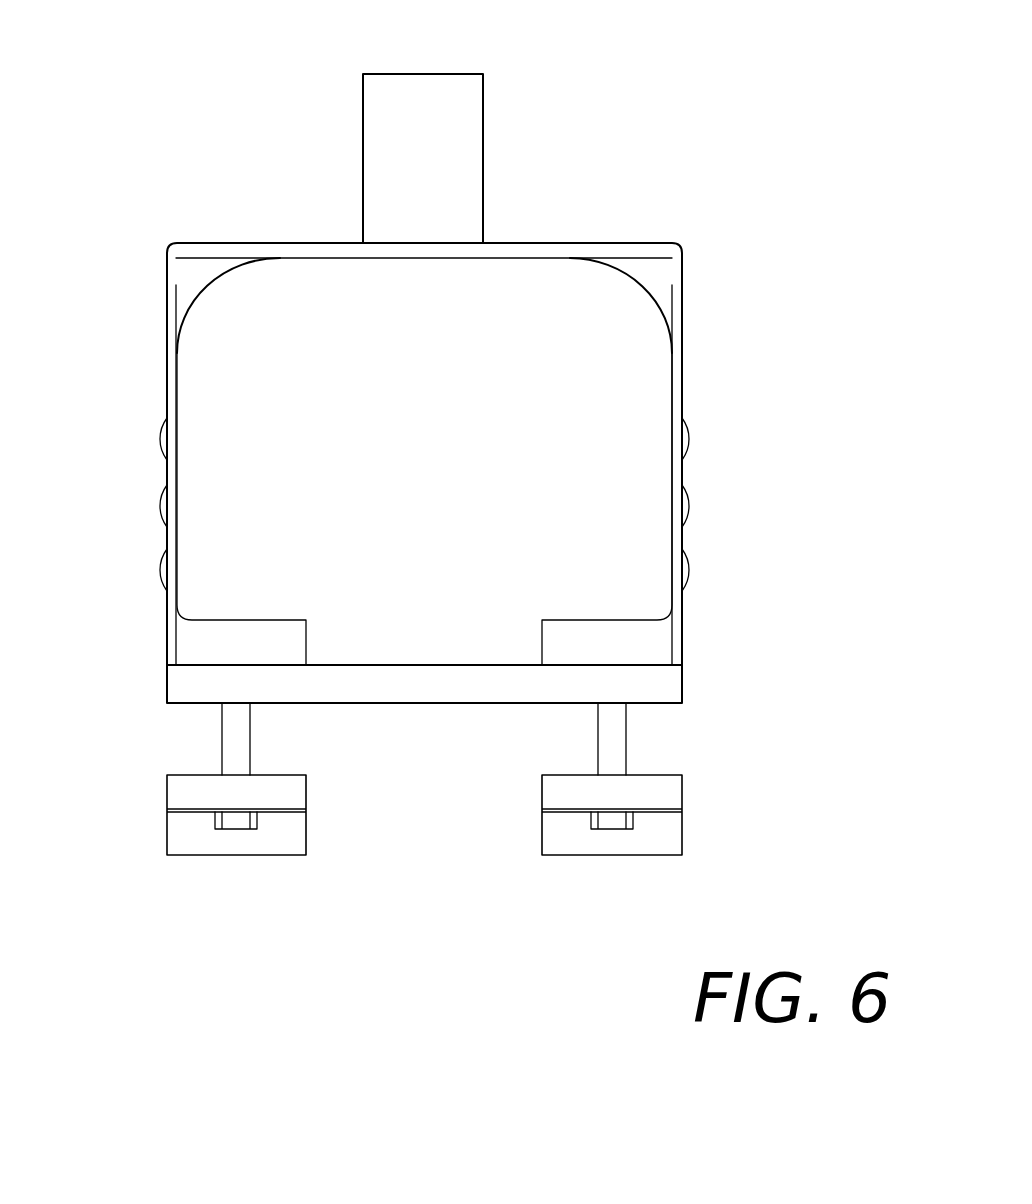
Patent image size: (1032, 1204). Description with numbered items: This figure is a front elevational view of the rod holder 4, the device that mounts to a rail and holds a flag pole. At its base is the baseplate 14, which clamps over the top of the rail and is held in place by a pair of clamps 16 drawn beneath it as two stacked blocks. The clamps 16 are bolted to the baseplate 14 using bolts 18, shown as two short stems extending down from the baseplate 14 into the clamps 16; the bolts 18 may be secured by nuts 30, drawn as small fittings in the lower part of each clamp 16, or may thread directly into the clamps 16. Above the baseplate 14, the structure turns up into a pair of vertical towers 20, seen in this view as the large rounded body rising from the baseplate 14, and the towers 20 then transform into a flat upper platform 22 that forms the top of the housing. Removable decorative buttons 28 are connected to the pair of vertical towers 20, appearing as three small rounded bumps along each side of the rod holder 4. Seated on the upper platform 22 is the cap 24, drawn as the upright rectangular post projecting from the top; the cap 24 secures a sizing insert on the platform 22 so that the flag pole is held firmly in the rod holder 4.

The rod holder 4 is at (140, 110).
The baseplate 14 is at (682, 685).
The clamps 16 is at (306, 802).
The bolts 18 is at (250, 731).
The vertical towers 20 is at (167, 378).
The upper platform 22 is at (323, 232).
The cap 24 is at (445, 138).
The decorative buttons 28 is at (160, 548).
The nuts 30 is at (237, 830).